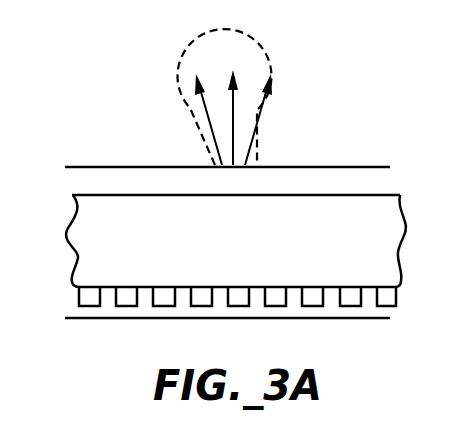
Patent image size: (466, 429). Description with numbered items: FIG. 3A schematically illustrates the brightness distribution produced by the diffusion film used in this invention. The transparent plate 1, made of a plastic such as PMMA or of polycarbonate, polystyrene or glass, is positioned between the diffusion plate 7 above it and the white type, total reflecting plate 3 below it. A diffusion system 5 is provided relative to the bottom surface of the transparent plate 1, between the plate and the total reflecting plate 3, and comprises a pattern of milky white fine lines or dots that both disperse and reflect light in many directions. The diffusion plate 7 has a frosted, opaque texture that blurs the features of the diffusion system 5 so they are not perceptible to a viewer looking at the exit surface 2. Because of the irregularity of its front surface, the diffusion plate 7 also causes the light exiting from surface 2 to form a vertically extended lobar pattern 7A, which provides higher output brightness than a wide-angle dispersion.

The vertically extended lobar pattern 7A is at (283, 56).
The diffusion plate 7 is at (368, 165).
The exit surface 2 is at (72, 195).
The transparent plate 1 is at (68, 226).
The diffusion system 5 is at (400, 300).
The total reflecting plate 3 is at (364, 320).